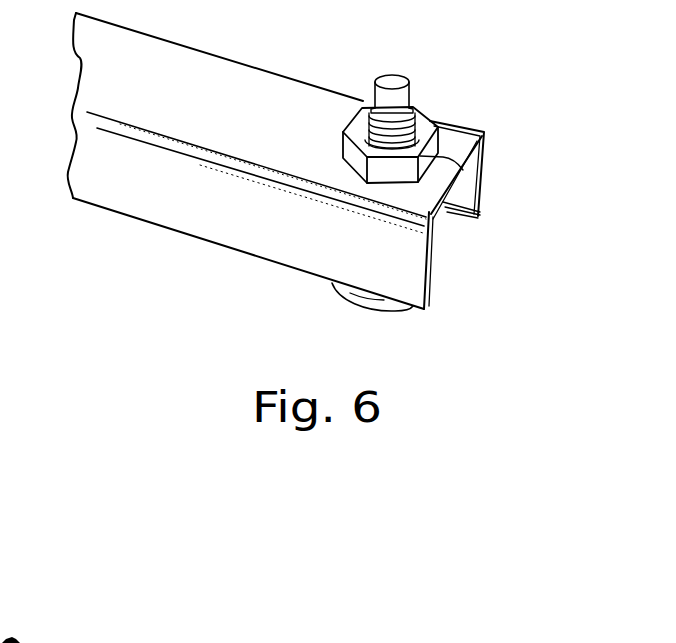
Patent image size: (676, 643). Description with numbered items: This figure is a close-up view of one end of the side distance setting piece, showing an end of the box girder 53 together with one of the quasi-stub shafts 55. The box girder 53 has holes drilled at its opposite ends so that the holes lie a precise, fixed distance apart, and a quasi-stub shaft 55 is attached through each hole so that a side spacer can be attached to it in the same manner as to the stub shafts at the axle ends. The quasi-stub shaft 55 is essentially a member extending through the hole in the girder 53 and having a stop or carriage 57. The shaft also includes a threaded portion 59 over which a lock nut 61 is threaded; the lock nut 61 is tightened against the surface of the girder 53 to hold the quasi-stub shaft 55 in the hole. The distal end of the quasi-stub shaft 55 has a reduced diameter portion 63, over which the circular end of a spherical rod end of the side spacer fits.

The box girder 53 is at (237, 74).
The quasi-stub shaft 55 is at (438, 78).
The stop or carriage 57 is at (360, 300).
The threaded portion 59 is at (422, 118).
The lock nut 61 is at (463, 170).
The reduced diameter portion 63 is at (392, 83).